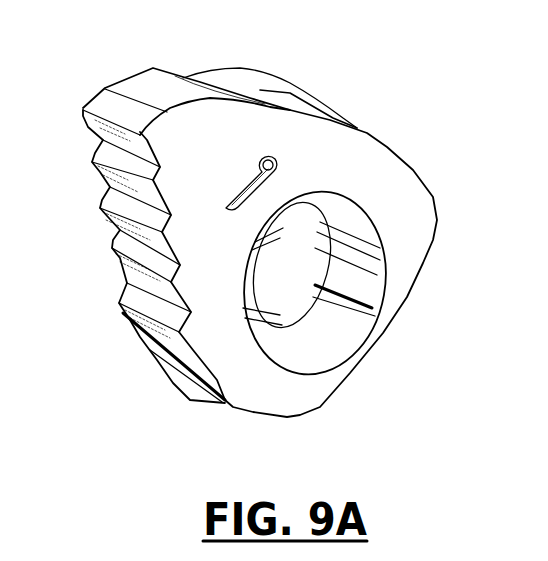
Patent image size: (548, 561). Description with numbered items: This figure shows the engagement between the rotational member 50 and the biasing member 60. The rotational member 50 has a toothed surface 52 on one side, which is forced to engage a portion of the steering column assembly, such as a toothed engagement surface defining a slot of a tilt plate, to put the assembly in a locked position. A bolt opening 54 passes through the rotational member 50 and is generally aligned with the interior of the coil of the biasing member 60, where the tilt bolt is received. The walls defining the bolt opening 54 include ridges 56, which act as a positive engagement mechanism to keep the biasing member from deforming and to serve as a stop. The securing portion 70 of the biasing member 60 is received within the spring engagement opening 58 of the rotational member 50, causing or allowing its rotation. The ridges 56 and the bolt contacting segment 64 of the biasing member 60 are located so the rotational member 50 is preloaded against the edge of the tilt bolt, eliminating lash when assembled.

The rotational member 50 is at (368, 152).
The toothed surface 52 is at (138, 275).
The bolt opening 54 is at (315, 325).
The ridges 56 is at (243, 277).
The spring engagement opening 58 is at (268, 165).
The biasing member 60 is at (313, 107).
The bolt contacting segment 64 is at (278, 278).
The securing portion 70 is at (246, 200).